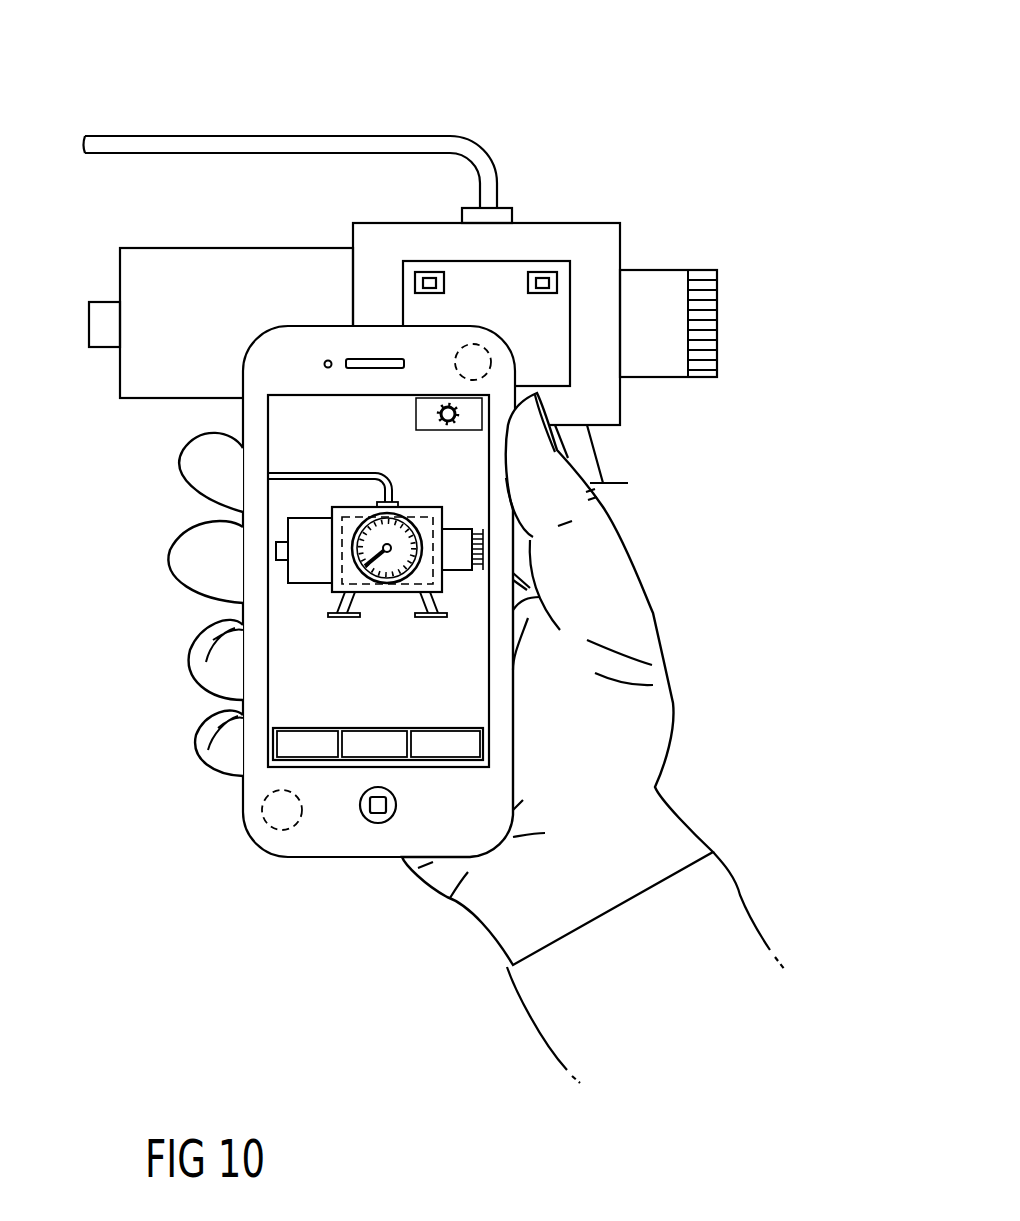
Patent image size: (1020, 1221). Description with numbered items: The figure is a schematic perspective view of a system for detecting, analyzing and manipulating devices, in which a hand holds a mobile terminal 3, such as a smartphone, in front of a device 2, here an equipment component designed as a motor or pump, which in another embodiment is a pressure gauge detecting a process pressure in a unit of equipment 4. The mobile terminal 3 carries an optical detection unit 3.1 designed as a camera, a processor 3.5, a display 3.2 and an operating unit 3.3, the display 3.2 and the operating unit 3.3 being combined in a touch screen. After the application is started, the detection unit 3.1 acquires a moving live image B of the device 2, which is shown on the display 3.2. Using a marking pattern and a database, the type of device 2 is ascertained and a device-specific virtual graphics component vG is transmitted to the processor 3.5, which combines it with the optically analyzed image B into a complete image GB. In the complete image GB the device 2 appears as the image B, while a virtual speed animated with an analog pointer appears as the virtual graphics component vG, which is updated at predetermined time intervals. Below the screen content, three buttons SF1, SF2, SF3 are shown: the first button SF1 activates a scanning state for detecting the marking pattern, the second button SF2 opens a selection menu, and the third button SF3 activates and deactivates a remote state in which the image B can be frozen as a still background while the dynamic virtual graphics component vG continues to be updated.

The device 2 is at (606, 213).
The mobile terminal 3 is at (325, 318).
The optical detection unit 3.1 is at (478, 360).
The display 3.2 is at (320, 413).
The operating unit 3.3 is at (470, 710).
The processor 3.5 is at (264, 806).
The unit of equipment 4 is at (337, 133).
The moving image B is at (283, 438).
The complete image GB is at (288, 665).
The virtual graphics component vG is at (355, 548).
The first button SF1 is at (307, 758).
The second button SF2 is at (386, 758).
The third button SF3 is at (452, 760).